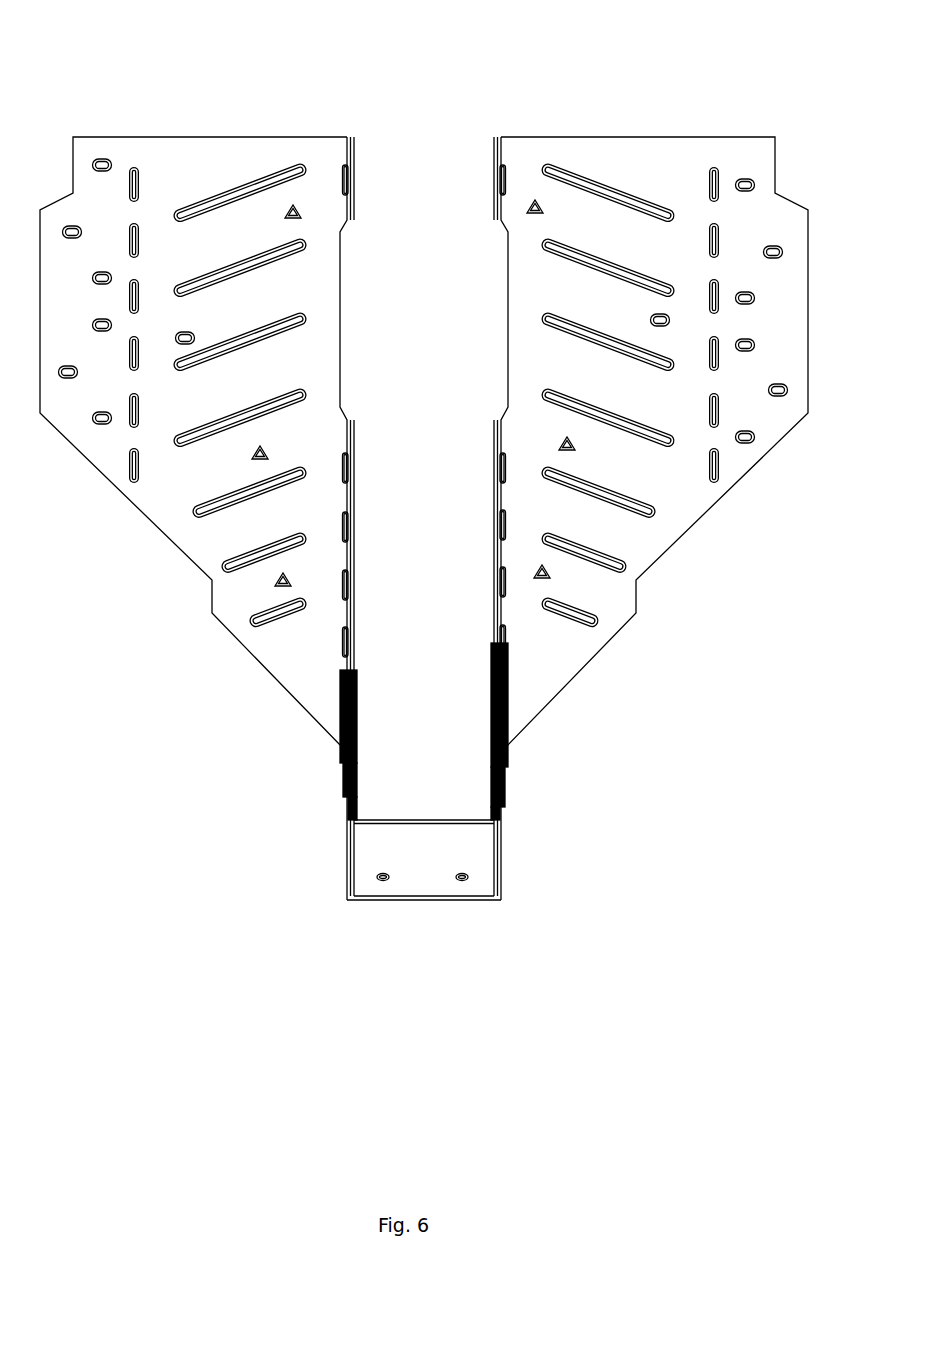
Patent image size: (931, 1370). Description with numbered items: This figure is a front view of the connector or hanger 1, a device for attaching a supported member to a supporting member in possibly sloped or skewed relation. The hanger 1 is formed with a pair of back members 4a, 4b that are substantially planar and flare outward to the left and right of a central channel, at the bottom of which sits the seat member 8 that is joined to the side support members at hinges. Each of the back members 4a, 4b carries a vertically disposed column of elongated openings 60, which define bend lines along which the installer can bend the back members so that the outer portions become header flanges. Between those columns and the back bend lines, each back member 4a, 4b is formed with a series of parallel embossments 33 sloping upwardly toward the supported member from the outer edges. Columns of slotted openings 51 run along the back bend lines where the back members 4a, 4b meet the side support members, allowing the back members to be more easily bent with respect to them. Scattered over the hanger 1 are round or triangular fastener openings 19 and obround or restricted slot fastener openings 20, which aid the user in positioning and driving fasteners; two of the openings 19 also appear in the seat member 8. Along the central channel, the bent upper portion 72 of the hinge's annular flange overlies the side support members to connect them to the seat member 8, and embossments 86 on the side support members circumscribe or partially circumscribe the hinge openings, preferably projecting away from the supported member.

The hanger 1 is at (777, 135).
The back member 4a is at (207, 158).
The back member 4b is at (605, 157).
The seat member 8 is at (430, 902).
The round or triangular fastener openings 19 is at (302, 211).
The obround or restricted slot fastener openings 20 is at (104, 284).
The embossments 33 is at (270, 345).
The slotted openings 51 is at (343, 527).
The elongated openings 60 is at (142, 186).
The upper portion of the annular flange 72 is at (340, 765).
The embossments 86 is at (346, 800).